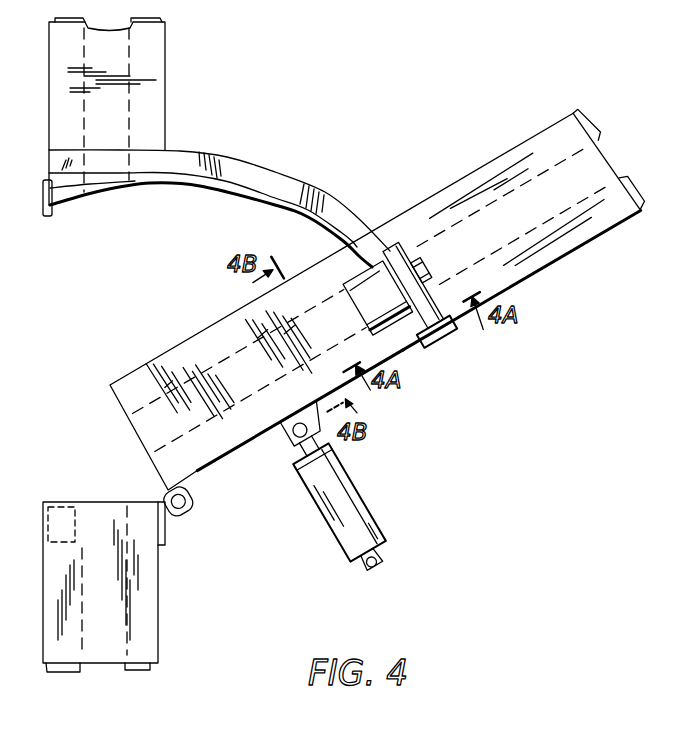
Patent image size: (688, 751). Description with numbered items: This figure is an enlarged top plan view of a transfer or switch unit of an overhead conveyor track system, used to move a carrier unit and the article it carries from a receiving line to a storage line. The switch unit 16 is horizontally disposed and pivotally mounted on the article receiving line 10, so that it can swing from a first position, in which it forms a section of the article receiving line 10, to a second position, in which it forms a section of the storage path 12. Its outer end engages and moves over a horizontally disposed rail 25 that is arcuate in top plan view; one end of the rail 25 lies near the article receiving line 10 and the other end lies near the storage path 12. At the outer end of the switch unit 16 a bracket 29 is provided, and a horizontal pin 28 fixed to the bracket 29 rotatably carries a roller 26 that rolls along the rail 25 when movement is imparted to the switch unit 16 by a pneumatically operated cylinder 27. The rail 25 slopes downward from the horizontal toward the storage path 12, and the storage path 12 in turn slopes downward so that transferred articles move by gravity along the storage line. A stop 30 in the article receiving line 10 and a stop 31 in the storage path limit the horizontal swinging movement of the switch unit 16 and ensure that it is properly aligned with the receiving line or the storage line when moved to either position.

The article receiving line 10 is at (150, 583).
The storage path 12 is at (472, 185).
The switch unit 16 is at (199, 333).
The rail 25 is at (256, 176).
The roller 26 is at (437, 331).
The pneumatically operated cylinder 27 is at (378, 507).
The horizontal pin 28 is at (427, 262).
The bracket 29 is at (362, 311).
The stop 30 is at (54, 212).
The stop 31 is at (422, 348).